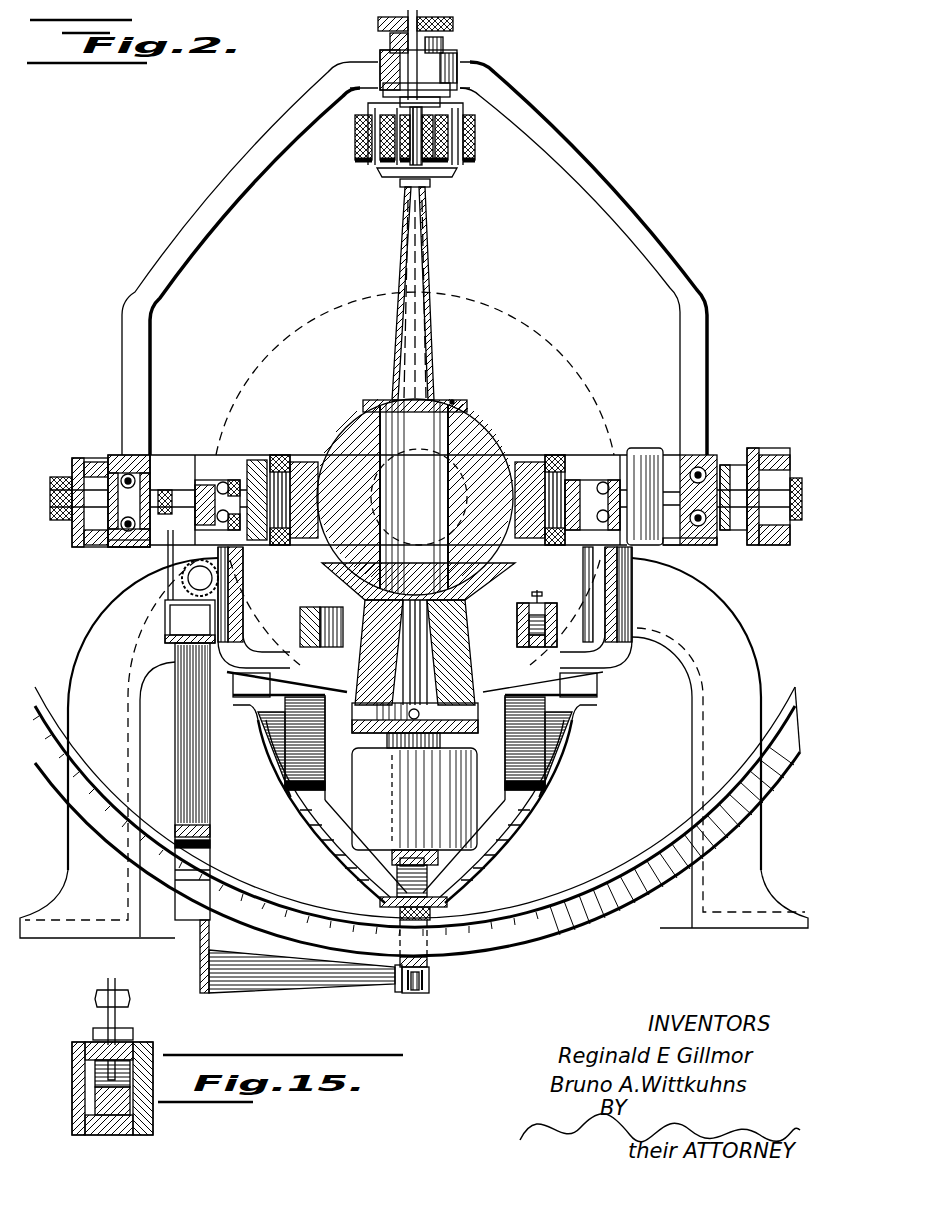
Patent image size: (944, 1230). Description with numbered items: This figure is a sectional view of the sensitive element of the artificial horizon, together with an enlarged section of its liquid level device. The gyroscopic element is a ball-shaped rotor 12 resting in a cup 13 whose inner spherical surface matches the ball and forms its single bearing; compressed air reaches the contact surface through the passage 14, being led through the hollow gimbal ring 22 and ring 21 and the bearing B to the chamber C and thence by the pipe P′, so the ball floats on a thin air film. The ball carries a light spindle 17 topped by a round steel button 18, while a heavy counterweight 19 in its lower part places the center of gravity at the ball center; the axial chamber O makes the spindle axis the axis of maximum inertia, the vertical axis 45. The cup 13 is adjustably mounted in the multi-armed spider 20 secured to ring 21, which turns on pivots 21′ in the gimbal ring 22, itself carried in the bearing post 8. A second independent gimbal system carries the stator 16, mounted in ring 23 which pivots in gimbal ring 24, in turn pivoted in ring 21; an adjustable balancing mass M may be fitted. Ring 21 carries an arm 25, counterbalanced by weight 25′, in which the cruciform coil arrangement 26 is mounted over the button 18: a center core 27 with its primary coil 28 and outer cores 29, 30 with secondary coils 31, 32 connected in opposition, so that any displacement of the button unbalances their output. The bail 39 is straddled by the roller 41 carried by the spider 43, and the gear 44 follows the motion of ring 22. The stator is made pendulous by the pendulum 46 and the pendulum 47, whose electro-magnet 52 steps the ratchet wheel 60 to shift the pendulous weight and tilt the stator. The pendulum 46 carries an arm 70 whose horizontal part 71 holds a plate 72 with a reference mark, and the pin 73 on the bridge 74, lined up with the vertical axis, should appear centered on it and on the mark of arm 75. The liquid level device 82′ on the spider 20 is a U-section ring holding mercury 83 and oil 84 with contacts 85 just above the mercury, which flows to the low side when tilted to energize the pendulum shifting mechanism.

In FIG. 2, the bearing post 8 is at (688, 618).
In FIG. 2, the ball-shaped rotor 12 is at (465, 420).
In FIG. 2, the cup 13 is at (505, 578).
In FIG. 2, the passage 14 is at (455, 714).
In FIG. 2, the stator 16 is at (285, 462).
In FIG. 2, the spindle 17 is at (433, 300).
In FIG. 2, the steel button 18 is at (450, 178).
In FIG. 2, the counterweight 19 is at (387, 652).
In FIG. 2, the multi-armed spider 20 is at (626, 616).
In FIG. 2, the ring 21 is at (123, 553).
In FIG. 2, the pivots 21′ is at (127, 458).
In FIG. 2, the gimbal ring 22 is at (80, 458).
In FIG. 2, the ring 23 is at (256, 460).
In FIG. 2, the gimbal ring 24 is at (212, 458).
In FIG. 2, the arm 25 is at (603, 207).
In FIG. 2, the weight 25′ is at (374, 800).
In FIG. 2, the cruciform coil arrangement 26 is at (445, 108).
In FIG. 2, the center core 27 is at (414, 160).
In FIG. 2, the center coil 28 is at (400, 152).
In FIG. 2, the outer core 29 is at (373, 143).
In FIG. 2, the outer core 30 is at (455, 150).
In FIG. 2, the coil 31 is at (357, 133).
In FIG. 2, the coil 32 is at (476, 133).
In FIG. 2, the bail 39 is at (605, 878).
In FIG. 2, the roller 41 is at (437, 912).
In FIG. 2, the spider 43 is at (495, 845).
In FIG. 2, the gear 44 is at (268, 362).
In FIG. 2, the vertical axis 45 is at (430, 345).
In FIG. 2, the pendulum 46 is at (170, 612).
In FIG. 2, the pendulum 47 is at (424, 994).
In FIG. 2, the electro-magnet 52 is at (185, 640).
In FIG. 2, the ratchet wheel 60 is at (184, 578).
In FIG. 2, the arm 70 is at (208, 803).
In FIG. 2, the horizontal part 71 is at (280, 988).
In FIG. 2, the plate 72 is at (398, 990).
In FIG. 2, the pin 73 is at (430, 980).
In FIG. 2, the bridge 74 is at (428, 962).
In FIG. 2, the arm 75 is at (410, 886).
In FIG. 2, the liquid level device 82′ is at (603, 668).
In FIG. 15, the liquid level device 82′ is at (152, 1130).
In FIG. 2, the mercury 83 is at (534, 645).
In FIG. 15, the mercury 83 is at (110, 1107).
In FIG. 2, the oil 84 is at (517, 628).
In FIG. 15, the oil 84 is at (95, 1078).
In FIG. 2, the contacts 85 is at (540, 606).
In FIG. 15, the contacts 85 is at (115, 982).
In FIG. 2, the axial chamber O is at (453, 401).
In FIG. 2, the balancing mass M is at (645, 458).
In FIG. 2, the bearing B is at (732, 465).
In FIG. 2, the chamber C is at (366, 720).
In FIG. 2, the pipe P′ is at (414, 806).